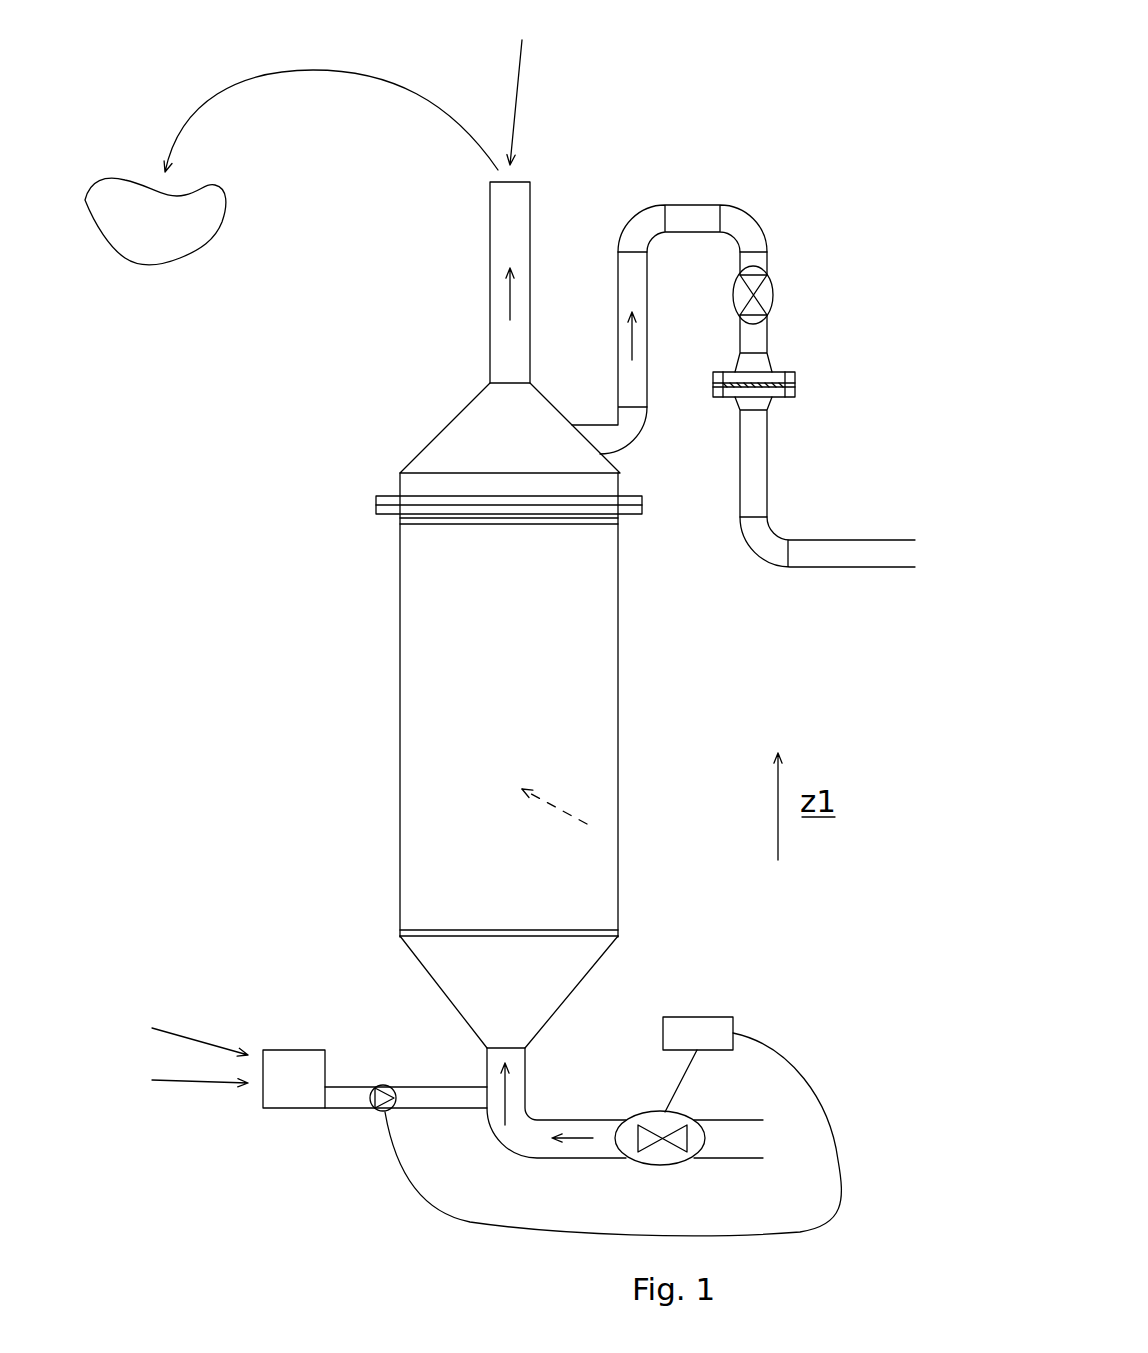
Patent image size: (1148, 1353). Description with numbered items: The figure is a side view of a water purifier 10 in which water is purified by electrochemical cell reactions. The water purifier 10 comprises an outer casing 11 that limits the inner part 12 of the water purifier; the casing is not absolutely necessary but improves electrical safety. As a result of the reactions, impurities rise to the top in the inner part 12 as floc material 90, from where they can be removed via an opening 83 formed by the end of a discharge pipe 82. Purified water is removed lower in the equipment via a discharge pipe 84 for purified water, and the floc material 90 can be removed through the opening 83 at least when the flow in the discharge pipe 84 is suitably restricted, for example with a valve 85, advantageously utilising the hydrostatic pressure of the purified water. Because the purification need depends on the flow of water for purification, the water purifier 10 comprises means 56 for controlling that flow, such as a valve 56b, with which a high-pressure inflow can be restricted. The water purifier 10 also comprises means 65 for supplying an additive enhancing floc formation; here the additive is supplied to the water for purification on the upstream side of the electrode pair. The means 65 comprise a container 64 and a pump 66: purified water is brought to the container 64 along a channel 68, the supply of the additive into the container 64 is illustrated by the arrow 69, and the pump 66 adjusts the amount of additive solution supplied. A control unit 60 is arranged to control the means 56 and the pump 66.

The water purifier 10 is at (365, 646).
The outer casing 11 is at (617, 716).
The inner part 12 is at (607, 834).
The means for controlling the flow of water for purification 56 is at (662, 1157).
The valve 56b is at (660, 1138).
The control unit 60 is at (680, 1049).
The container 64 is at (276, 1095).
The means for supplying an additive 65 is at (332, 1033).
The pump 66 is at (373, 1107).
The channel 68 is at (200, 1028).
The arrow illustrating supply of additive 69 is at (200, 1100).
The discharge pipe 82 is at (493, 230).
The opening 83 is at (517, 82).
The discharge pipe for purified water 84 is at (622, 252).
The valve 85 is at (773, 283).
The floc material 90 is at (163, 229).